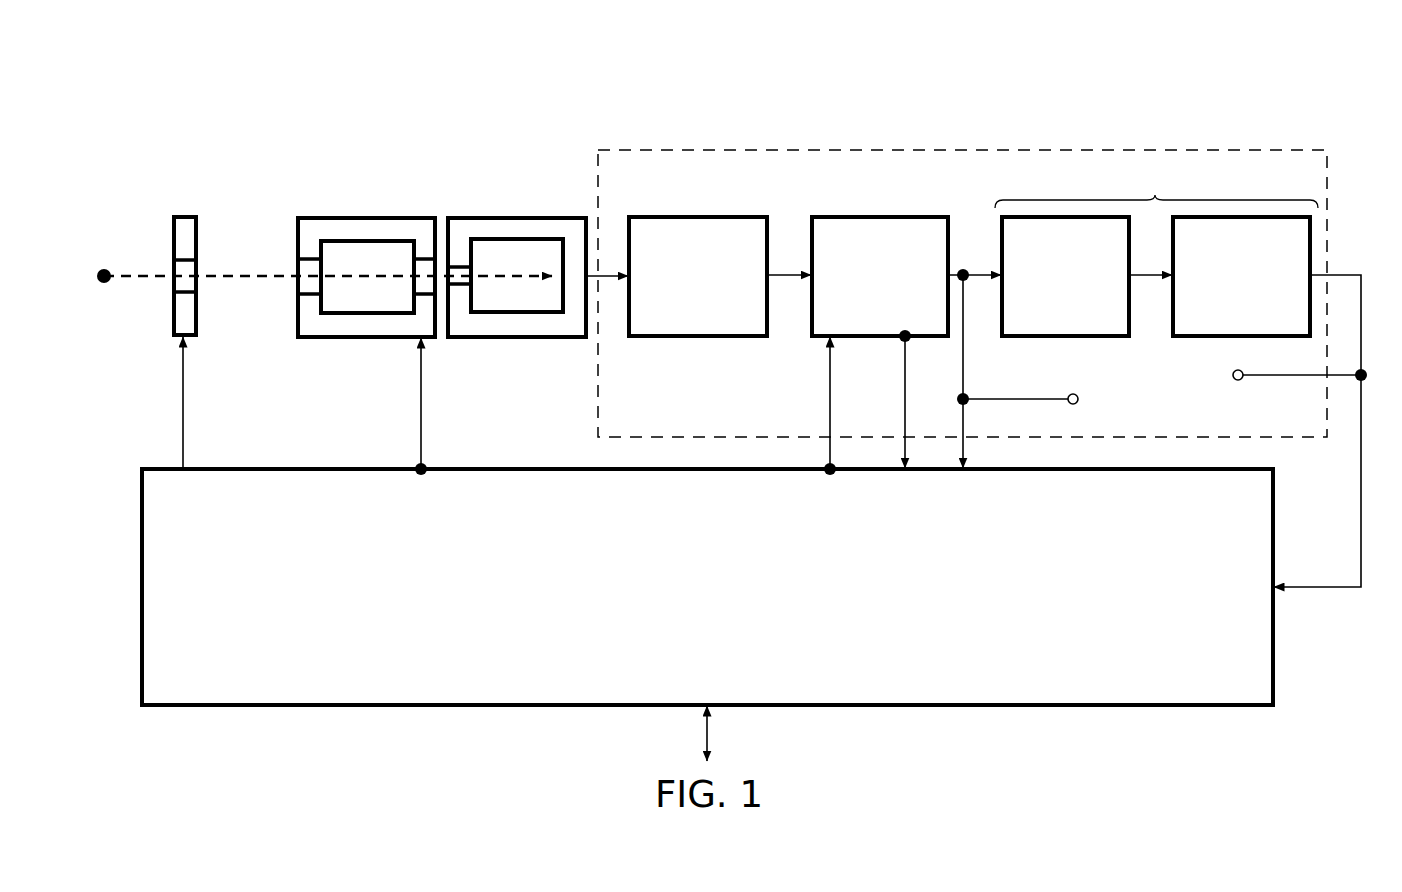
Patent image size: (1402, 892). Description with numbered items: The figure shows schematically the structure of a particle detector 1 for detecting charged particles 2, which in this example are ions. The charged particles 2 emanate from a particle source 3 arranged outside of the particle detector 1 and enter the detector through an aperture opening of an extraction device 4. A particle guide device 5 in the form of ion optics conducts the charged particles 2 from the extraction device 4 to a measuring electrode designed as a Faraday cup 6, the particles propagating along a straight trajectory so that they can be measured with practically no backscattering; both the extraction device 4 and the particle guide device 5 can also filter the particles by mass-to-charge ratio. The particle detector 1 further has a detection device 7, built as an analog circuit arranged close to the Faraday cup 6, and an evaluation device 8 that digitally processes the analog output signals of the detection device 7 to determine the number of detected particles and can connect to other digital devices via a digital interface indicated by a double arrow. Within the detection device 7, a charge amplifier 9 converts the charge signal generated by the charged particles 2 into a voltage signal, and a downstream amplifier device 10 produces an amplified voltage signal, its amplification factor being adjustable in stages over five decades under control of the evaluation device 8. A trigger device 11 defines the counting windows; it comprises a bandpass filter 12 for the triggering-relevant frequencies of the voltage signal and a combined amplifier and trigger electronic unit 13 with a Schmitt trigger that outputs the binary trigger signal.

The particle detector 1 is at (205, 97).
The charged particles 2 is at (272, 283).
The particle source 3 is at (108, 270).
The extraction device 4 is at (186, 236).
The particle guide device 5 is at (364, 231).
The Faraday cup 6 is at (497, 231).
The detection device 7 is at (830, 150).
The evaluation device 8 is at (1028, 683).
The charge amplifier 9 is at (693, 245).
The amplifier device 10 is at (881, 243).
The trigger device 11 is at (1186, 214).
The bandpass filter 12 is at (1033, 245).
The combined amplifier and trigger electronic unit 13 is at (1280, 260).